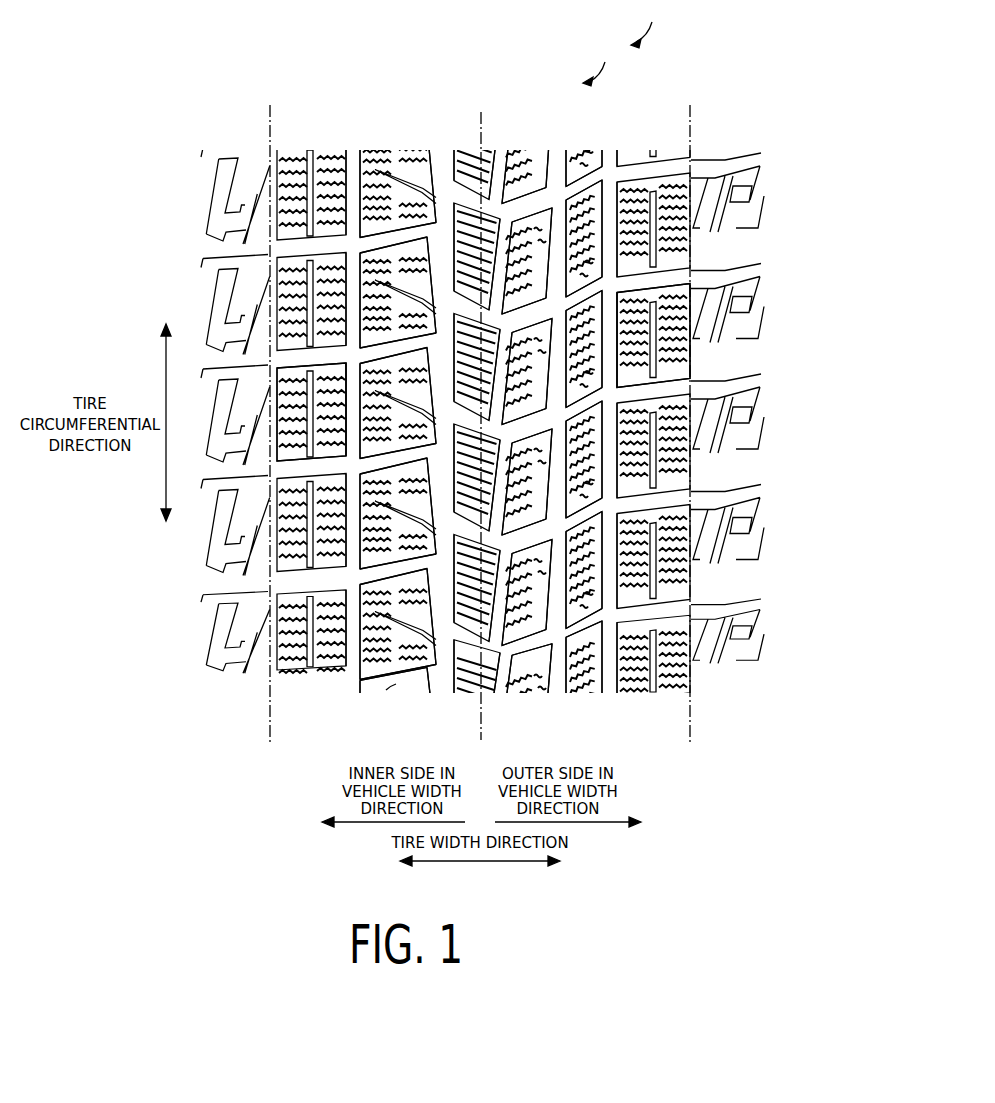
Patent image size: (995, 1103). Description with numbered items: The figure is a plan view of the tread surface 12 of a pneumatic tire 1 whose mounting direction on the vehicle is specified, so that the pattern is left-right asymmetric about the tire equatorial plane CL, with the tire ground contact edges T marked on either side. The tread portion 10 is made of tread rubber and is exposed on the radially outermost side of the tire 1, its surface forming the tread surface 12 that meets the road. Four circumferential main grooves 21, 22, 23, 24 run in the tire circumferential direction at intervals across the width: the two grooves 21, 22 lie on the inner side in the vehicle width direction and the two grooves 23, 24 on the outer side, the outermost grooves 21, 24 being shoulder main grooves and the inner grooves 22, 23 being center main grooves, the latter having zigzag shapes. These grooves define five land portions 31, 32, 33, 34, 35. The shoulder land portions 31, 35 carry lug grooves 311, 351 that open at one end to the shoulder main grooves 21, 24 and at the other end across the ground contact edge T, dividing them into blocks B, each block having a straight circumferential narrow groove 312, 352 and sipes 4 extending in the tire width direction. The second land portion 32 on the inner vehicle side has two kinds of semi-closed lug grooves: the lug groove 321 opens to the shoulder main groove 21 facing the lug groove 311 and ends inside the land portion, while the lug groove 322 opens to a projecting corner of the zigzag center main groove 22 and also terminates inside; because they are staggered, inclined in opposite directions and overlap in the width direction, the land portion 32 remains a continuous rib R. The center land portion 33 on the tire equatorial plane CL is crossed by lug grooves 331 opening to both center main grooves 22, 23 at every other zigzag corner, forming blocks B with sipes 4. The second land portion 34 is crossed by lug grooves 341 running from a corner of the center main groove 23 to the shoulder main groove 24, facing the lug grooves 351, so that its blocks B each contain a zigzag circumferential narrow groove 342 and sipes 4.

The pneumatic tire 1 is at (646, 24).
The tread portion 10 is at (600, 63).
The tread surface 12 is at (531, 170).
The circumferential main groove 21 is at (350, 161).
The circumferential main groove 22 is at (448, 161).
The circumferential main groove 23 is at (497, 175).
The circumferential main groove 24 is at (609, 157).
The shoulder land portion 31 is at (294, 178).
The second land portion 32 is at (373, 177).
The center land portion 33 is at (468, 179).
The second land portion 34 is at (580, 165).
The shoulder land portion 35 is at (668, 186).
The lug groove 311 is at (315, 440).
The circumferential narrow groove 312 is at (322, 335).
The lug groove 321 is at (363, 470).
The lug groove 322 is at (420, 625).
The lug groove 331 is at (470, 655).
The lug groove 341 is at (586, 650).
The circumferential narrow groove 342 is at (583, 295).
The lug groove 351 is at (660, 660).
The circumferential narrow groove 352 is at (695, 255).
The sipe 4 is at (396, 292).
The block B is at (546, 205).
The rib R is at (390, 692).
The tire ground contact edge T is at (480, 416).
The tire equatorial plane CL is at (479, 417).